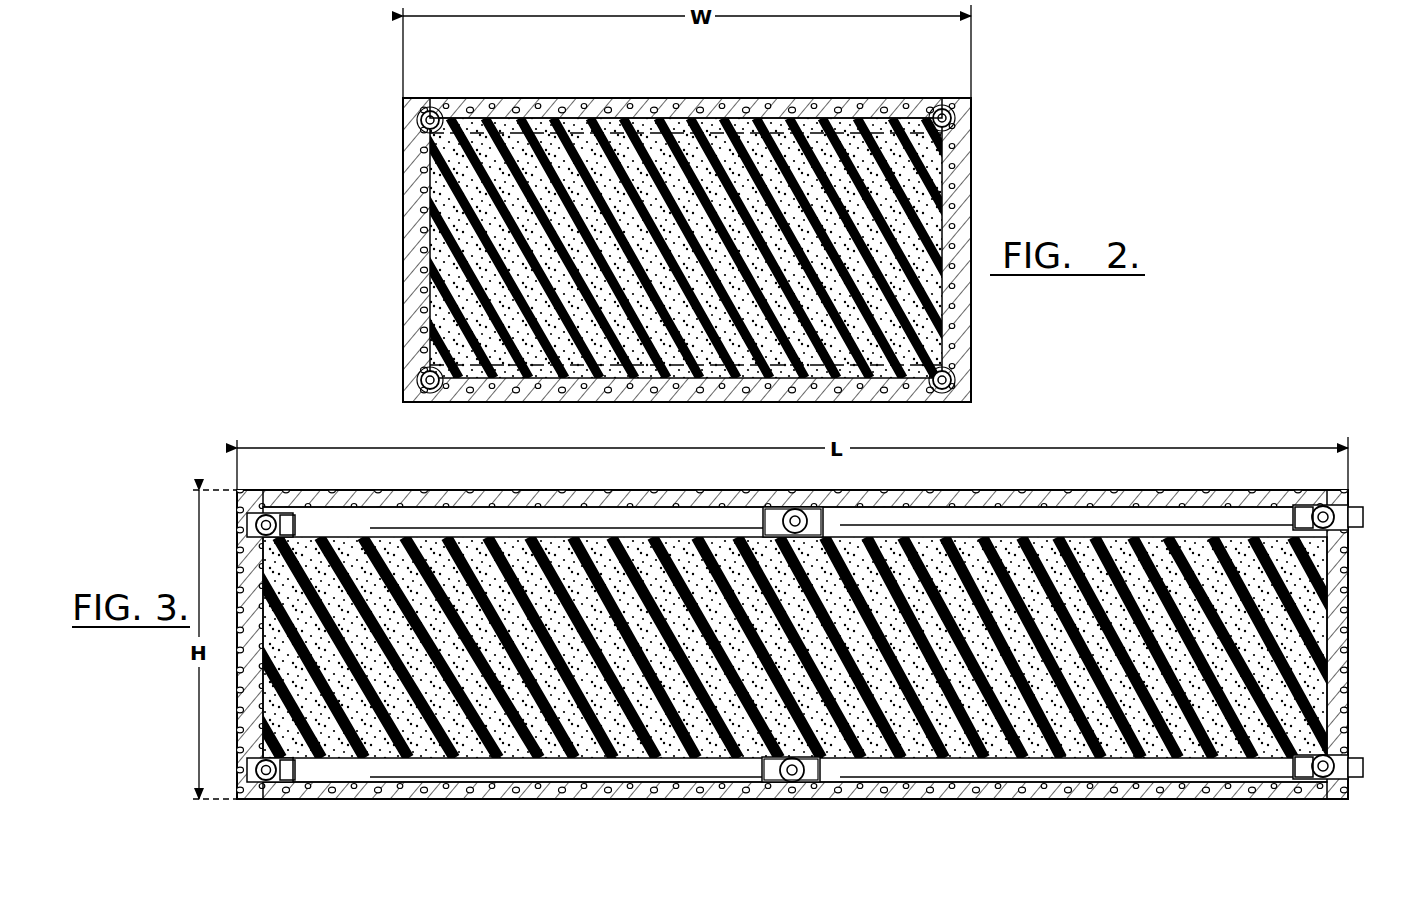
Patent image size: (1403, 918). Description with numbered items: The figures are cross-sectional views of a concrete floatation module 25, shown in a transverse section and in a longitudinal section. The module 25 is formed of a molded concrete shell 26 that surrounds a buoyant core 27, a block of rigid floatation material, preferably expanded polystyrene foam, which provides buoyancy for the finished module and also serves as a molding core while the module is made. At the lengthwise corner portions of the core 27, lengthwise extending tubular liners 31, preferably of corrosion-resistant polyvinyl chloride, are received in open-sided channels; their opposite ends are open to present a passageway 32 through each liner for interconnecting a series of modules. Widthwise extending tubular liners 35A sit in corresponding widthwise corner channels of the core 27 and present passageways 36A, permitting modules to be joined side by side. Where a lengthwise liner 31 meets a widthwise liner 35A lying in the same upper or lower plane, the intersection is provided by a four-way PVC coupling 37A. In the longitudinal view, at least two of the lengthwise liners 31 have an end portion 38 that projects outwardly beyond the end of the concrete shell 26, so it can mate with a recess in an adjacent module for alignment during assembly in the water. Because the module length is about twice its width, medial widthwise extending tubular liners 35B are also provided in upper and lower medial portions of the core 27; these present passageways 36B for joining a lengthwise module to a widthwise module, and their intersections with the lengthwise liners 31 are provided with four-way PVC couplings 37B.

In FIG. 2, the concrete floatation module 25 is at (714, 90).
In FIG. 3, the concrete floatation module 25 is at (1128, 468).
In FIG. 2, the molded concrete shell 26 is at (975, 206).
In FIG. 3, the molded concrete shell 26 is at (1347, 660).
In FIG. 2, the buoyant core 27 is at (421, 272).
In FIG. 3, the buoyant core 27 is at (272, 705).
In FIG. 2, the lengthwise extending tubular liner 31 is at (433, 115).
In FIG. 3, the lengthwise extending tubular liner 31 is at (978, 505).
In FIG. 2, the passageway 32 is at (420, 127).
In FIG. 2, the widthwise extending tubular liner 35A is at (838, 98).
In FIG. 3, the widthwise extending tubular liner 35A is at (303, 488).
In FIG. 3, the medial widthwise extending tubular liner 35B is at (824, 510).
In FIG. 3, the passageway 36A is at (250, 526).
In FIG. 3, the passageway 36B is at (788, 506).
In FIG. 3, the four-way PVC coupling 37A is at (250, 508).
In FIG. 3, the four-way PVC coupling 37B is at (763, 511).
In FIG. 3, the end portion 38 is at (1358, 505).